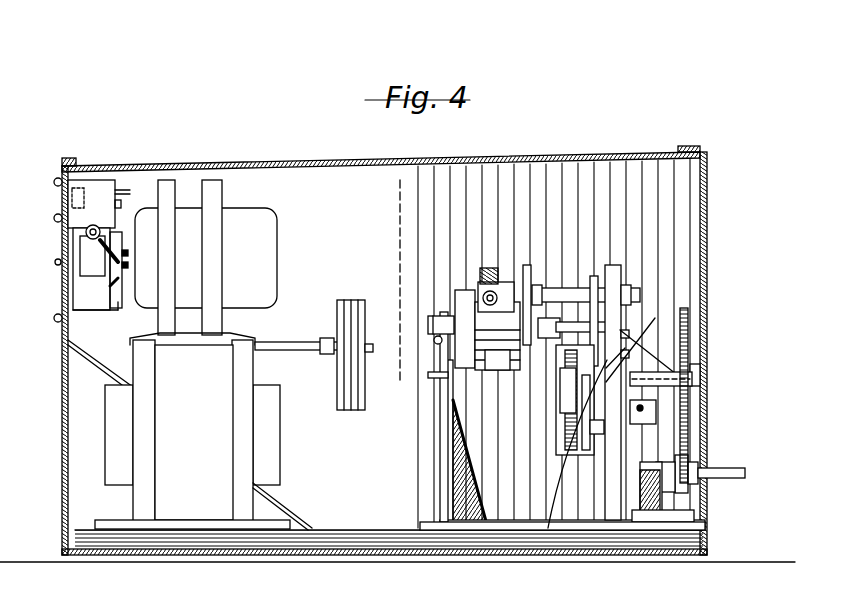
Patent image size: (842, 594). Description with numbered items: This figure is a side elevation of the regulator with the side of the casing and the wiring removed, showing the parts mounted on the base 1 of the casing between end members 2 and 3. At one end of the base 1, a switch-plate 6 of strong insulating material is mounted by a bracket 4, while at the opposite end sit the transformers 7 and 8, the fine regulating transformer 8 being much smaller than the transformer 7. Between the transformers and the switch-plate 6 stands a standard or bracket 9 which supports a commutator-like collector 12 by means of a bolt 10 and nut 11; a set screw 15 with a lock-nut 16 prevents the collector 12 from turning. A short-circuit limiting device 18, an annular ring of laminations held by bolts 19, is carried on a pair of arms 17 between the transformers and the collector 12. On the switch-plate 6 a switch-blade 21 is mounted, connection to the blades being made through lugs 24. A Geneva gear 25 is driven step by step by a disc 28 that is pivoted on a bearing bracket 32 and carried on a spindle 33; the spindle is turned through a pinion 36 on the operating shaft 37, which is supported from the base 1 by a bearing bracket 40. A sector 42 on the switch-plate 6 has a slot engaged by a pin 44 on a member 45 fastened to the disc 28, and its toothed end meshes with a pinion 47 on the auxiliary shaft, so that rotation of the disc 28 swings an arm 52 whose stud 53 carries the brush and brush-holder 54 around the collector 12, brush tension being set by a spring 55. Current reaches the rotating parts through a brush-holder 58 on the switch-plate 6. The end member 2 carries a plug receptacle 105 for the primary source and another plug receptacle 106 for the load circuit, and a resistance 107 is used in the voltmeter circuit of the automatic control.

The base 1 is at (545, 536).
The end member 2 is at (62, 375).
The end member 3 is at (707, 218).
The bracket 4 is at (590, 528).
The switch-plate 6 is at (612, 268).
The transformer 7 is at (203, 431).
The fine regulating transformer 8 is at (206, 257).
The standard or bracket 9 is at (447, 462).
The bolt 10 is at (428, 340).
The nut 11 is at (458, 315).
The collector 12 is at (482, 325).
The set screw 15 is at (440, 400).
The lock-nut 16 is at (436, 378).
The arms 17 is at (290, 352).
The short-circuit limiting device 18 is at (352, 300).
The bolts 19 is at (327, 358).
The switch-blade 21 is at (640, 342).
The lugs 24 is at (648, 430).
The Geneva gear 25 is at (592, 440).
The disc 28 is at (635, 346).
The bearing bracket 32 is at (702, 372).
The spindle 33 is at (700, 380).
The pinion 36 is at (690, 468).
The operating shaft 37 is at (728, 480).
The bearing bracket 40 is at (650, 525).
The sector 42 is at (580, 424).
The pin 44 is at (552, 360).
The member 45 is at (540, 423).
The pinion 47 is at (592, 295).
The arm 52 is at (530, 266).
The stud 53 is at (506, 272).
The brush and brush-holder 54 is at (497, 336).
The spring 55 is at (470, 292).
The brush-holder 58 is at (594, 278).
The plug receptacle 105 is at (120, 310).
The plug receptacle 106 is at (78, 266).
The resistance 107 is at (110, 182).